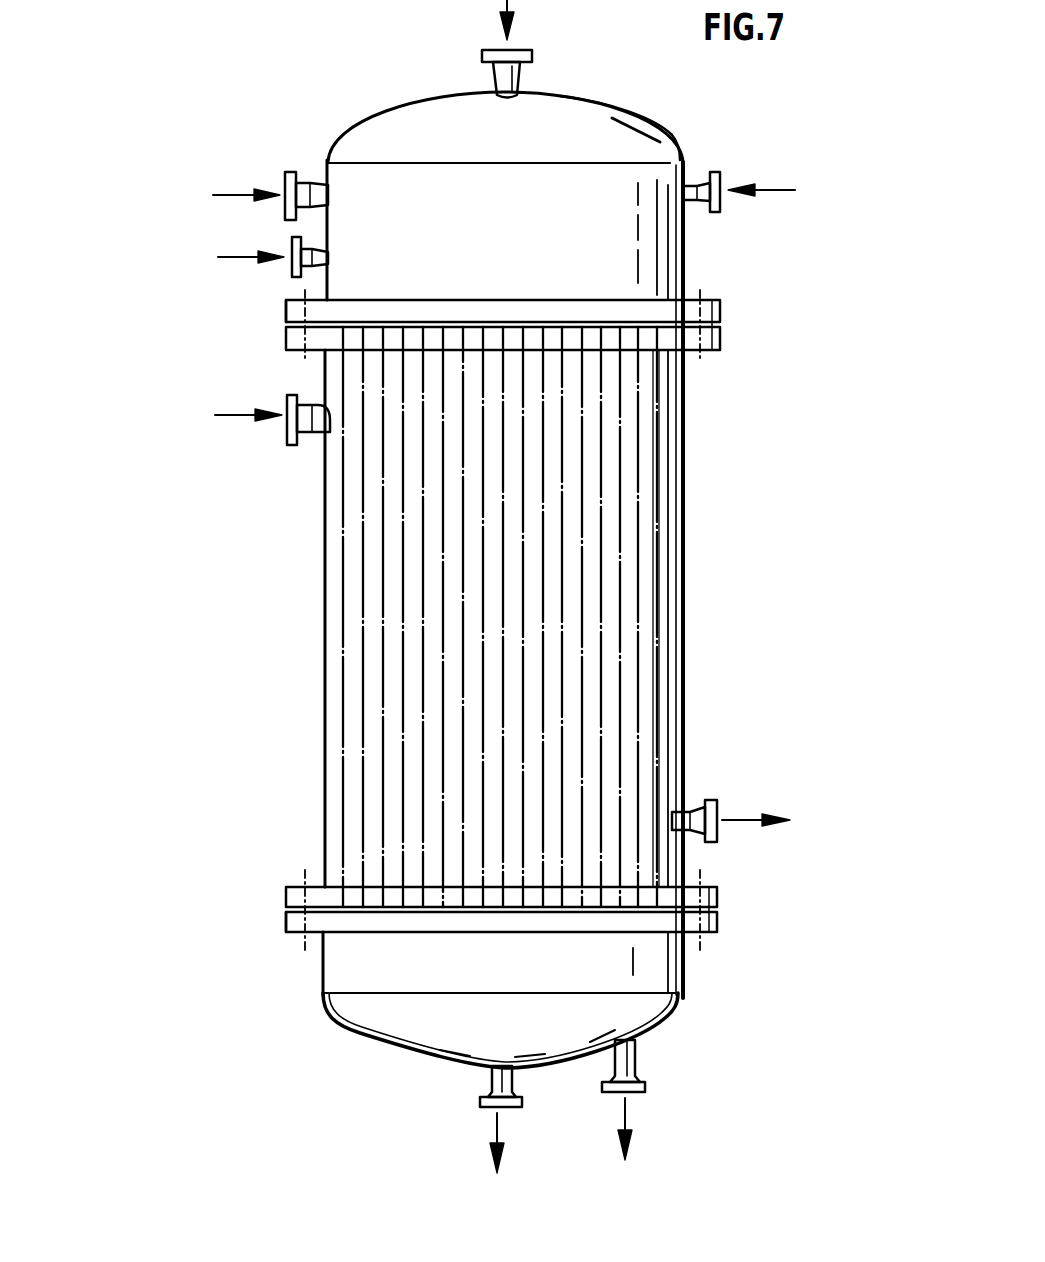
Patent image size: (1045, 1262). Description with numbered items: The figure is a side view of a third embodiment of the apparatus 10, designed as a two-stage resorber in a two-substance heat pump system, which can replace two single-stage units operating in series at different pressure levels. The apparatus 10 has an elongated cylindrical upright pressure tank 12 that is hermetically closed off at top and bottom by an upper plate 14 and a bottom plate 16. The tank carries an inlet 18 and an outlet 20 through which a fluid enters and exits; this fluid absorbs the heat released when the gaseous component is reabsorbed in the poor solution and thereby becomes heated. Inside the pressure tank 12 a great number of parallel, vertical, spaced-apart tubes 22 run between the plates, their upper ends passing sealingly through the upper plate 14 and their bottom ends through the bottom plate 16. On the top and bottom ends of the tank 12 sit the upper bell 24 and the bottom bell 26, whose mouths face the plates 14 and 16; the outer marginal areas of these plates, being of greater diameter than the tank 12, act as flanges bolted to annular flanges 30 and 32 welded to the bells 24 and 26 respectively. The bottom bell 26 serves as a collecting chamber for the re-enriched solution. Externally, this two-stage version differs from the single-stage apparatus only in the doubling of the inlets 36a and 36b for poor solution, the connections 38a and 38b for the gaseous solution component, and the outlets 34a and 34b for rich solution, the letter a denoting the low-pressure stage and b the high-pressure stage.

The apparatus 10 is at (693, 560).
The pressure tank 12 is at (325, 570).
The upper plate 14 is at (712, 353).
The bottom plate 16 is at (290, 886).
The inlet 18 is at (310, 434).
The outlet 20 is at (672, 818).
The tubes 22 is at (363, 672).
The upper bell 24 is at (680, 277).
The bottom bell 26 is at (323, 975).
The annular flange 30 is at (288, 307).
The annular flange 32 is at (288, 934).
The outlet for rich solution 34a is at (636, 1050).
The outlet for rich solution 34b is at (492, 1078).
The inlet for poor solution 36a is at (313, 268).
The inlet for poor solution 36b is at (700, 201).
The connection for gaseous solution component 38a is at (316, 181).
The connection for gaseous solution component 38b is at (495, 80).